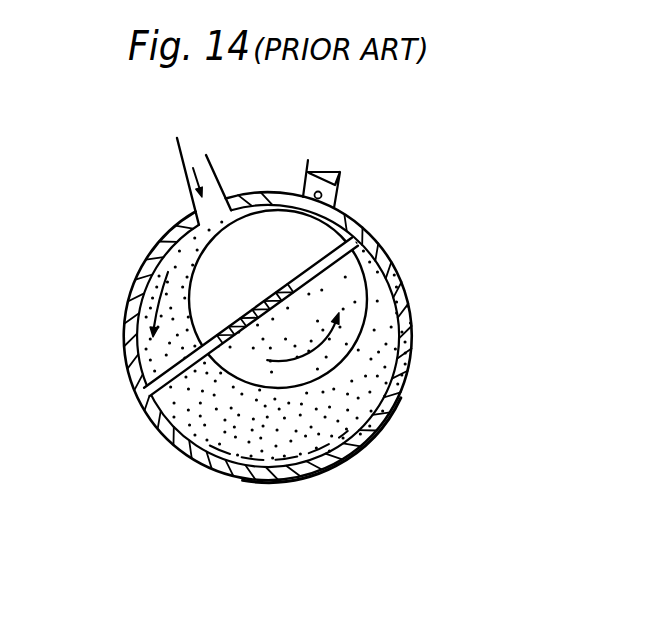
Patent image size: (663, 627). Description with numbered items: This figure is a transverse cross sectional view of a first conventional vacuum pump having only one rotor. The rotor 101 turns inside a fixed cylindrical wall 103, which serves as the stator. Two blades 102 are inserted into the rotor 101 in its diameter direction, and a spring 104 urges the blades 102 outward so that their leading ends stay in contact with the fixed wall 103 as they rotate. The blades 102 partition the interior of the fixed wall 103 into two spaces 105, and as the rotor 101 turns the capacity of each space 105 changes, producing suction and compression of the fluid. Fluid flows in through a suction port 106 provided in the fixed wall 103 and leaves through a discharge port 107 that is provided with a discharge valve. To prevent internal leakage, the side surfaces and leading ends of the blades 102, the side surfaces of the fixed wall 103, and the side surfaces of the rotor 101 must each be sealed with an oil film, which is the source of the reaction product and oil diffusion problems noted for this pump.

The rotor 101 is at (345, 288).
The blade 102 is at (160, 372).
The fixed wall 103 is at (343, 457).
The spring 104 is at (259, 304).
The space 105 is at (142, 283).
The suction port 106 is at (188, 180).
The discharge port 107 is at (340, 181).